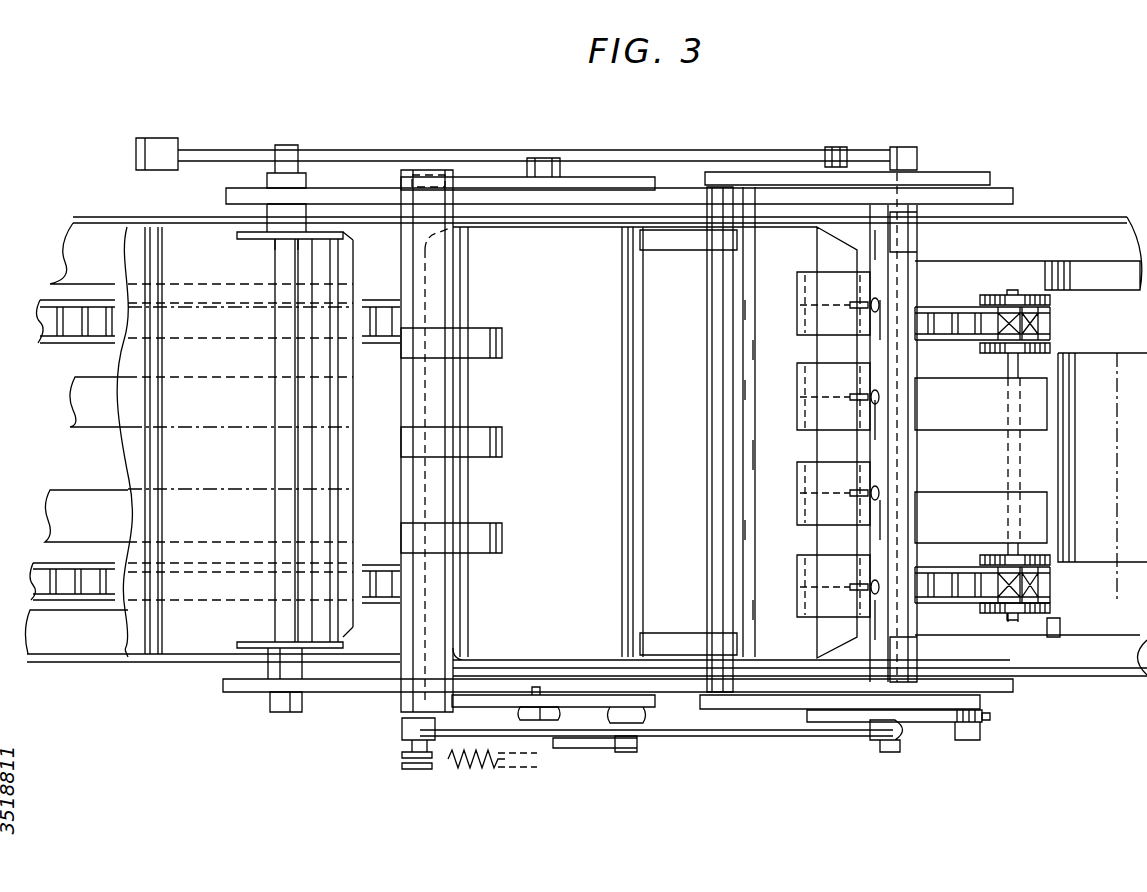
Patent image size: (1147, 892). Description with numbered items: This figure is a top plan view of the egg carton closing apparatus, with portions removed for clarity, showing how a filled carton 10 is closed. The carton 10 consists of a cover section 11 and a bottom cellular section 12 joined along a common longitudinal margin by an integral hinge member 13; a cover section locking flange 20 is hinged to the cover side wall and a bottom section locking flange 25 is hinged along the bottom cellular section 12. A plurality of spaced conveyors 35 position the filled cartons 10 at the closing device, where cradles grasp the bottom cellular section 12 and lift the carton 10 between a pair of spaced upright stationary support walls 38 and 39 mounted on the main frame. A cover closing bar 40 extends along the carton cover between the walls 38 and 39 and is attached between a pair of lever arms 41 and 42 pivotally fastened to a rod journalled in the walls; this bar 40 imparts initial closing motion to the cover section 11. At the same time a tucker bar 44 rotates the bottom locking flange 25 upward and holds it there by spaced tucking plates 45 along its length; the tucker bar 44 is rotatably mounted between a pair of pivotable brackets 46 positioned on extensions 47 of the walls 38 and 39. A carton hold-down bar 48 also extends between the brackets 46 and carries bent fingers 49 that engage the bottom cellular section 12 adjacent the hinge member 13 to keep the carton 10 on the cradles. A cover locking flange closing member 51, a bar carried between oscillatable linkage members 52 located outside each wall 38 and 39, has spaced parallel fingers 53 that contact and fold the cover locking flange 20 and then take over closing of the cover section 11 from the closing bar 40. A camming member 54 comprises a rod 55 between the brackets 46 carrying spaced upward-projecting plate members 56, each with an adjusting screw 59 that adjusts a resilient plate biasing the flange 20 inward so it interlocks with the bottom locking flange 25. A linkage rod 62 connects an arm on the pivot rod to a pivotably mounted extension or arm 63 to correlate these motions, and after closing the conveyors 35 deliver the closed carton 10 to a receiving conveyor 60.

The carton 10 is at (619, 210).
The cover section 11 is at (130, 450).
The bottom cellular section 12 is at (232, 470).
The hinge member 13 is at (158, 345).
The cover section locking flange 20 is at (398, 675).
The bottom section locking flange 25 is at (842, 648).
The conveyors 35 is at (950, 570).
The support wall 38 is at (506, 685).
The support wall 39 is at (320, 187).
The cover closing bar 40 is at (318, 500).
The lever arm 41 is at (240, 645).
The lever arm 42 is at (255, 237).
The tucker bar 44 is at (908, 452).
The tucking plates 45 is at (920, 283).
The pivotable brackets 46 is at (990, 716).
The extensions 47 is at (967, 177).
The carton hold-down bar 48 is at (738, 200).
The bent fingers 49 is at (667, 240).
The cover locking flange closing member 51 is at (448, 170).
The oscillatable linkage members 52 is at (502, 175).
The fingers 53 is at (483, 325).
The cover locking flange camming member 54 is at (905, 180).
The rod 55 is at (873, 220).
The plate members 56 is at (793, 292).
The adjusting screw 59 is at (880, 395).
The receiving conveyor 60 is at (1127, 355).
The linkage rod 62 is at (538, 720).
The extension or arm 63 is at (150, 138).